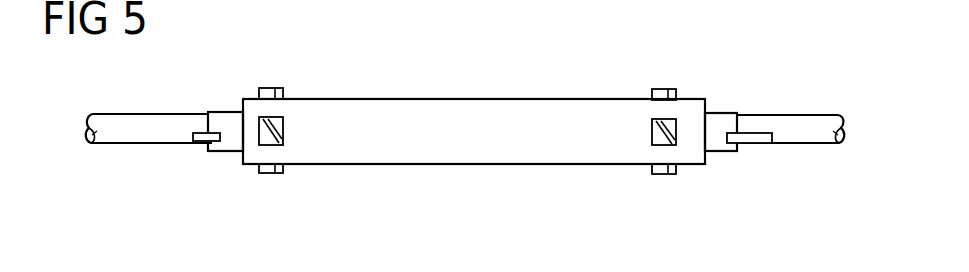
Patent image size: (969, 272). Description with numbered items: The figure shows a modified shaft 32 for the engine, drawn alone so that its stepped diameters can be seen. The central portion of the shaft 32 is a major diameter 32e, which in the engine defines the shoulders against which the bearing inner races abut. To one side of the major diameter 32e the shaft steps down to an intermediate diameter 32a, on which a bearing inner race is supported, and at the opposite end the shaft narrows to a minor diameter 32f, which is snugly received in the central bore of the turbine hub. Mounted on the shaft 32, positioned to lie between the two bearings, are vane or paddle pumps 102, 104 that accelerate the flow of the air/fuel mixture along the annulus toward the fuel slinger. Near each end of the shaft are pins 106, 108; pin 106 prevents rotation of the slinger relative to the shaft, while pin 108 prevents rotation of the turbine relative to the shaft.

The shaft 32 is at (428, 186).
The intermediate diameter 32a is at (118, 133).
The major diameter 32e is at (440, 103).
The minor diameter 32f is at (806, 143).
The vane or paddle pump 102 is at (659, 72).
The vane or paddle pump 104 is at (270, 68).
The pin 106 is at (200, 141).
The pin 108 is at (747, 143).